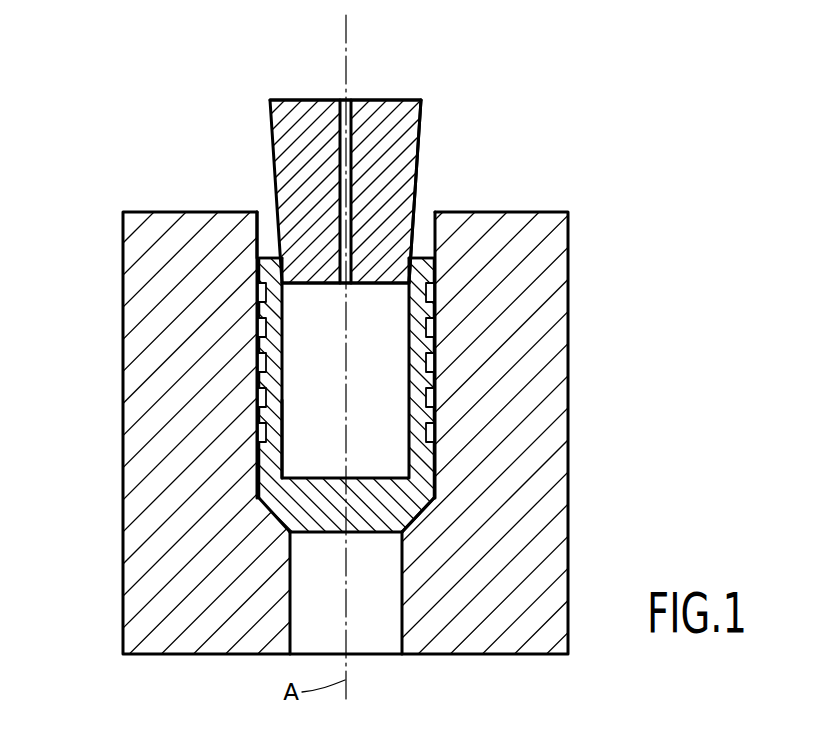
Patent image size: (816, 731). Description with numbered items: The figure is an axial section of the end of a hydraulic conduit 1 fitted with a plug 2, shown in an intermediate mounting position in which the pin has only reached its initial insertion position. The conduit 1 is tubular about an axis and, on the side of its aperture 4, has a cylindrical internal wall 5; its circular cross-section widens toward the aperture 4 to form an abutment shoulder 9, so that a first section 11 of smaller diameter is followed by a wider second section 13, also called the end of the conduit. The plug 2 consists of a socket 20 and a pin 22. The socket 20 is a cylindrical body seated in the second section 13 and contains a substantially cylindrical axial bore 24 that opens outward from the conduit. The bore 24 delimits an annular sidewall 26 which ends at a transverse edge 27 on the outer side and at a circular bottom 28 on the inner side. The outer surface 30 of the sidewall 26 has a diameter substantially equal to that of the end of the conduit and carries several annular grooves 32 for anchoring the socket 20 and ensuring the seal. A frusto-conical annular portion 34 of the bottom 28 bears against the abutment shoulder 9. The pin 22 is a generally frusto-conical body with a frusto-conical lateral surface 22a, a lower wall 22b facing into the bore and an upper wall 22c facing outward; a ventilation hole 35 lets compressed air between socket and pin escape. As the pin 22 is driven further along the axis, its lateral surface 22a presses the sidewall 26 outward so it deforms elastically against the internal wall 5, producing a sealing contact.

The hydraulic conduit 1 is at (150, 603).
The plug 2 is at (422, 206).
The aperture 4 is at (267, 231).
The cylindrical internal wall 5 is at (433, 243).
The abutment shoulder 9 is at (285, 515).
The first section 11 is at (378, 655).
The second section 13 is at (266, 252).
The socket 20 is at (422, 472).
The pin 22 is at (407, 113).
The frusto-conical lateral surface 22a is at (407, 142).
The lower wall 22b is at (373, 285).
The upper wall 22c is at (393, 100).
The axial bore 24 is at (400, 460).
The sidewall 26 is at (286, 470).
The transverse edge 27 is at (260, 238).
The bottom 28 is at (378, 480).
The outer surface of the sidewall 30 is at (260, 342).
The annular grooves 32 is at (260, 406).
The frusto-conical annular portion 34 is at (420, 512).
The ventilation hole 35 is at (342, 100).